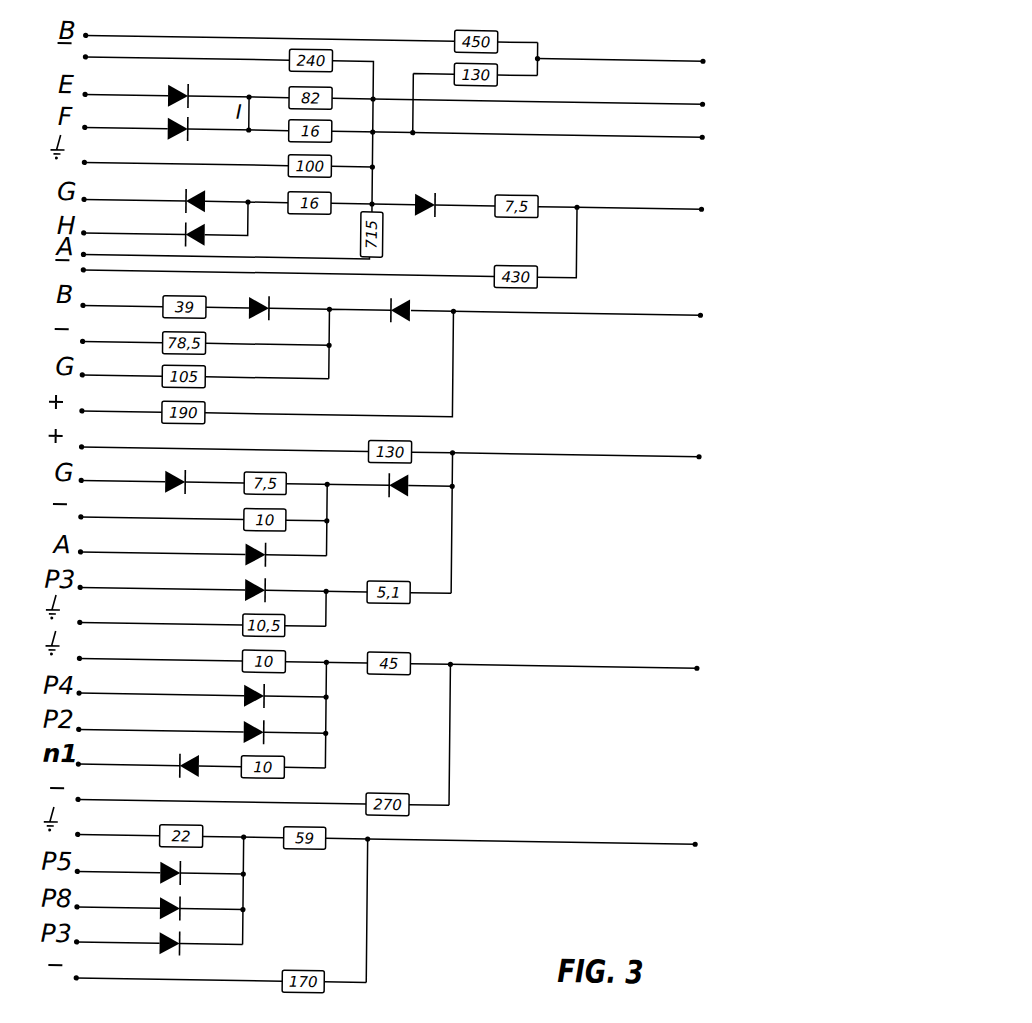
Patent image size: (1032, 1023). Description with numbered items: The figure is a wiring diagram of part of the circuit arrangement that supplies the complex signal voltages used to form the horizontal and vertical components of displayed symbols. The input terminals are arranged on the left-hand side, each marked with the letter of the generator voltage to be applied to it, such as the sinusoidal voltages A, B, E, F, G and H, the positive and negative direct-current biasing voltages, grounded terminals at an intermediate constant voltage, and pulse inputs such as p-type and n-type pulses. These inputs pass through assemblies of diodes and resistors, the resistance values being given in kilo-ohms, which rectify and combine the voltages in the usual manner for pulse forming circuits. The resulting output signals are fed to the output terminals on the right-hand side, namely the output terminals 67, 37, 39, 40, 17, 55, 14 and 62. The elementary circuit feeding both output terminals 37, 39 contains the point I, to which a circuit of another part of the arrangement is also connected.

The output terminal 67 is at (640, 52).
The output terminal 37 is at (559, 92).
The output terminal 39 is at (579, 128).
The output terminal 40 is at (660, 201).
The output terminal 17 is at (595, 305).
The output terminal 55 is at (593, 445).
The output terminal 14 is at (592, 655).
The output terminal 62 is at (553, 833).